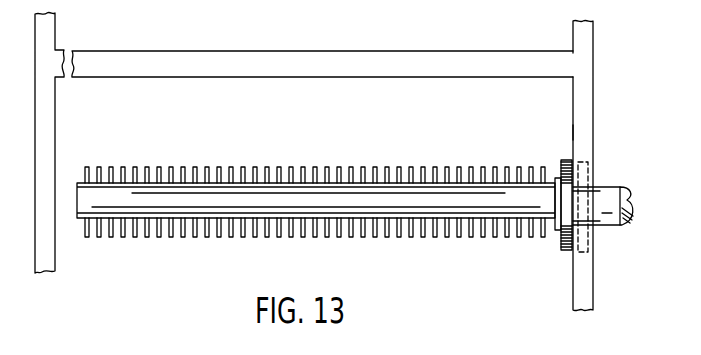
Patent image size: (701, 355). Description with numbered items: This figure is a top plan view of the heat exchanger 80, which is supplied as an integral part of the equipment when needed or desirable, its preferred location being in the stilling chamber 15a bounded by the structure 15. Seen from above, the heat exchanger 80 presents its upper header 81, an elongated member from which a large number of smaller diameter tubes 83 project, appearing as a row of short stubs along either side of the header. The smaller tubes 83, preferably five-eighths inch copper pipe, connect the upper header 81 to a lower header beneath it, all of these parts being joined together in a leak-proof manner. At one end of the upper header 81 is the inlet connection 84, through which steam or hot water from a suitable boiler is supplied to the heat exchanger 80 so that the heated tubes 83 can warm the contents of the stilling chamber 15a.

The frame post 15 is at (597, 106).
The stilling chamber 15a is at (558, 132).
The heat exchanger 80 is at (332, 204).
The upper header 81 is at (387, 200).
The smaller diameter tubes 83 is at (123, 237).
The inlet connection 84 is at (617, 196).